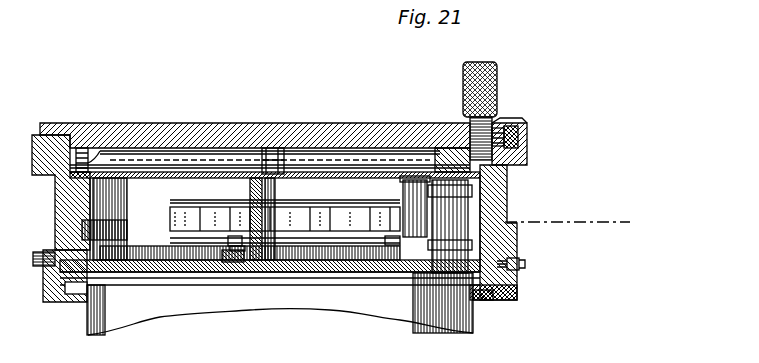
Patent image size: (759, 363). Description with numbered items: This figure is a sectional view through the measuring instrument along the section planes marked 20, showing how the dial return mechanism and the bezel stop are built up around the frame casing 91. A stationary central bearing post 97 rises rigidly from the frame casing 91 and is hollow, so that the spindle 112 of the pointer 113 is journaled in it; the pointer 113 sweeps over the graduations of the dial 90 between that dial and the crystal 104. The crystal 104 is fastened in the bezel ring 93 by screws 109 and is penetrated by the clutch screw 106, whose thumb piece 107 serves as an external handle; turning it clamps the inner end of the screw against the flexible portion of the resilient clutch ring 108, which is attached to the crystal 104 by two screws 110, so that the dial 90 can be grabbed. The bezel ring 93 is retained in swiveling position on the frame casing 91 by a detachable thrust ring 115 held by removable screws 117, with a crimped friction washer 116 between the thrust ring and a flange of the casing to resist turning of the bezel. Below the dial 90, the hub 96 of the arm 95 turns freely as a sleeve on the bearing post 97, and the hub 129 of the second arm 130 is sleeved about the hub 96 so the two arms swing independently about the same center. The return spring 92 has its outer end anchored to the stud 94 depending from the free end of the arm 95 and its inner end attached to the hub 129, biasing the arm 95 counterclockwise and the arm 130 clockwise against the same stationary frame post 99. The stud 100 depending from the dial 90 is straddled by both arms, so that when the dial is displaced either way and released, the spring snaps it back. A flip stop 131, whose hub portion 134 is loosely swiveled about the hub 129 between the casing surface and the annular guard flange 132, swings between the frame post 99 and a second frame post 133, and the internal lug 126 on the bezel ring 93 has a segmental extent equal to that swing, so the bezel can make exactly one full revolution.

The cartridge assembly 20 is at (318, 172).
The dial 90 is at (390, 178).
The frame casing 91 is at (157, 267).
The return spring 92 is at (170, 232).
The bezel ring 93 is at (507, 205).
The stud 94 is at (417, 273).
The arm 95 is at (338, 190).
The hub 96 is at (256, 182).
The bearing post 97 is at (273, 182).
The frame post 99 is at (500, 245).
The stud 100 is at (413, 180).
The crystal 104 is at (199, 122).
The clutch screw 106 is at (502, 127).
The thumb piece 107 is at (497, 118).
The clutch ring 108 is at (520, 147).
The screws 109 is at (508, 135).
The screws 110 is at (87, 122).
The spindle 112 is at (277, 152).
The pointer 113 is at (165, 122).
The thrust ring 115 is at (517, 292).
The friction washer 116 is at (480, 300).
The screws 117 is at (523, 267).
The internal lug 126 is at (463, 247).
The hub 129 is at (243, 257).
The arm 130 is at (357, 207).
The flip stop 131 is at (367, 250).
The guard flange 132 is at (233, 238).
The frame post 133 is at (397, 243).
The hub portion 134 is at (230, 255).